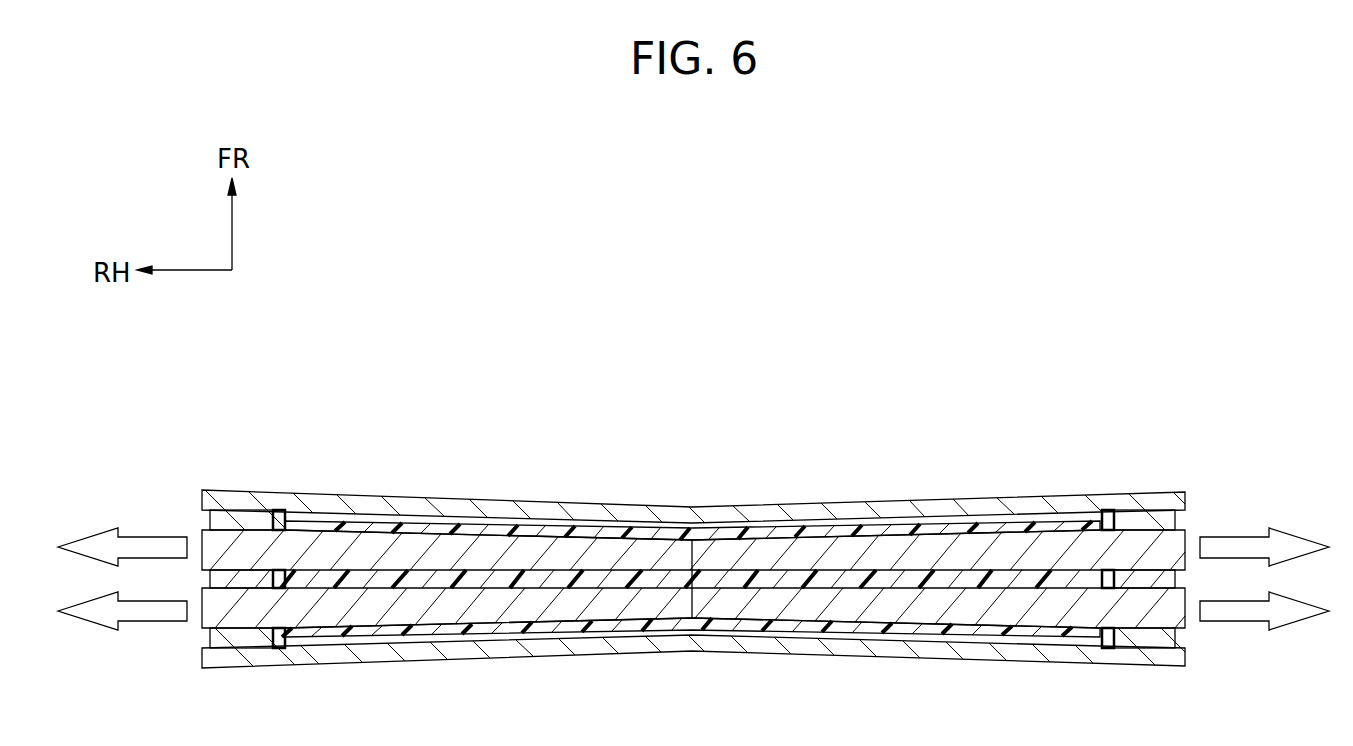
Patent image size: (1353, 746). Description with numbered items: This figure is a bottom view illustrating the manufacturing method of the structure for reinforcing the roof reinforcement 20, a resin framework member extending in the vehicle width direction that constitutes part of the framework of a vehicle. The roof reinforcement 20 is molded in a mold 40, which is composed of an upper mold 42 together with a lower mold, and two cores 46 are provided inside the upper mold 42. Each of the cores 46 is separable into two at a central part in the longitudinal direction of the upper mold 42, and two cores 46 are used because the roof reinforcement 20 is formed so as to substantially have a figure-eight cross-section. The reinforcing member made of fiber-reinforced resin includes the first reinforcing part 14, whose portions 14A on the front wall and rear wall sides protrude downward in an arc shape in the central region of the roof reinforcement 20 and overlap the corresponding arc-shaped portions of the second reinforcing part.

The mold 40 is at (706, 542).
The upper mold 42 is at (1164, 488).
The cores 46 is at (204, 544).
The first reinforcing part 14 is at (843, 520).
The portions of the first reinforcing part 14A is at (704, 524).
The roof reinforcement 20 is at (909, 516).